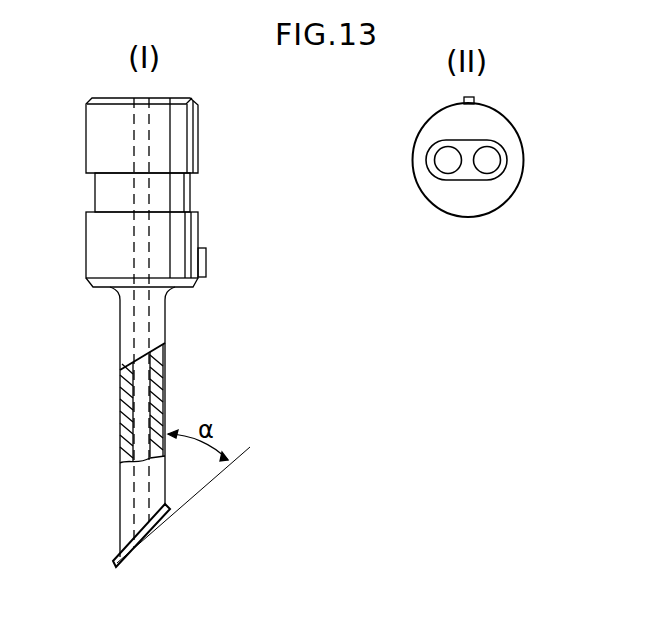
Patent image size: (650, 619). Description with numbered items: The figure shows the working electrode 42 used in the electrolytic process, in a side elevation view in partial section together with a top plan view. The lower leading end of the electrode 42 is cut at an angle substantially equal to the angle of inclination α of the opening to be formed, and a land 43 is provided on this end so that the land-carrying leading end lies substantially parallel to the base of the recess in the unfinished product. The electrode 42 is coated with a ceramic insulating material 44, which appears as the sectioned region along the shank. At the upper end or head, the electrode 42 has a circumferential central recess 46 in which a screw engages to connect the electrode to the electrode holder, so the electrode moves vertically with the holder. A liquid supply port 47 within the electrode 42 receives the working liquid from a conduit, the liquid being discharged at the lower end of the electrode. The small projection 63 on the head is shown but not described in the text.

The working electrode 42 is at (112, 331).
The land 43 is at (170, 508).
The ceramic insulating material 44 is at (165, 370).
The circumferential central recess 46 is at (190, 192).
The liquid supply port 47 is at (147, 143).
The button 63 is at (206, 262).